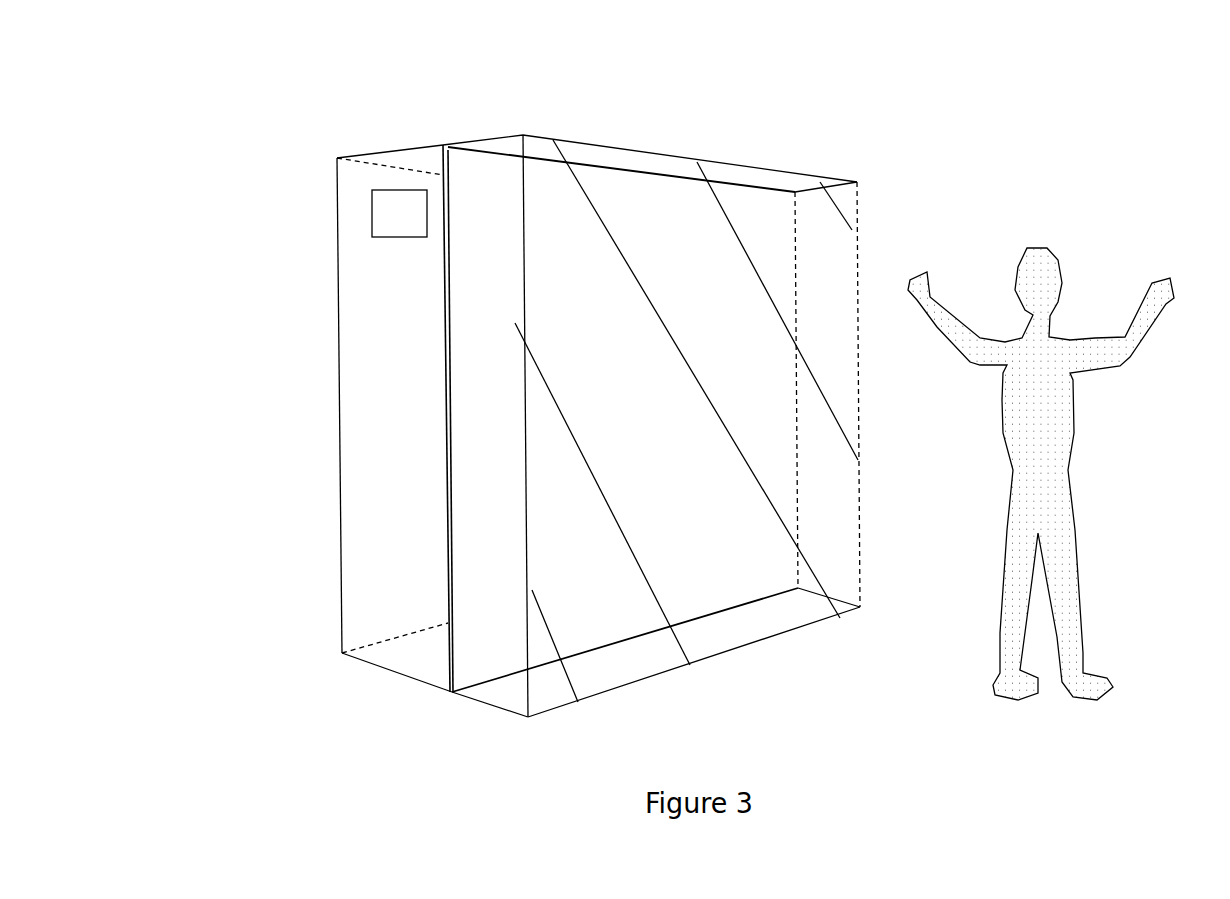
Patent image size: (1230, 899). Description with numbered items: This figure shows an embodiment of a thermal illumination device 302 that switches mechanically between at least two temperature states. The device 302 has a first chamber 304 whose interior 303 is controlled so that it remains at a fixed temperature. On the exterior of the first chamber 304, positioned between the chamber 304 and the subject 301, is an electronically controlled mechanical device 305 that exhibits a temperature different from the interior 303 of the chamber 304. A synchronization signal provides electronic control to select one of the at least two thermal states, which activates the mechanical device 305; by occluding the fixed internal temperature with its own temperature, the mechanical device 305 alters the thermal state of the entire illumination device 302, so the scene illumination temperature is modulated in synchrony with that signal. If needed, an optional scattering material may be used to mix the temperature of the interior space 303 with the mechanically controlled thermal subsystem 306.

The subject 301 is at (1063, 272).
The thermal illumination device 302 is at (502, 738).
The interior 303 is at (405, 188).
The first chamber 304 is at (337, 287).
The electronically controlled mechanical device 305 is at (602, 138).
The mechanically controlled thermal subsystem 306 is at (805, 586).